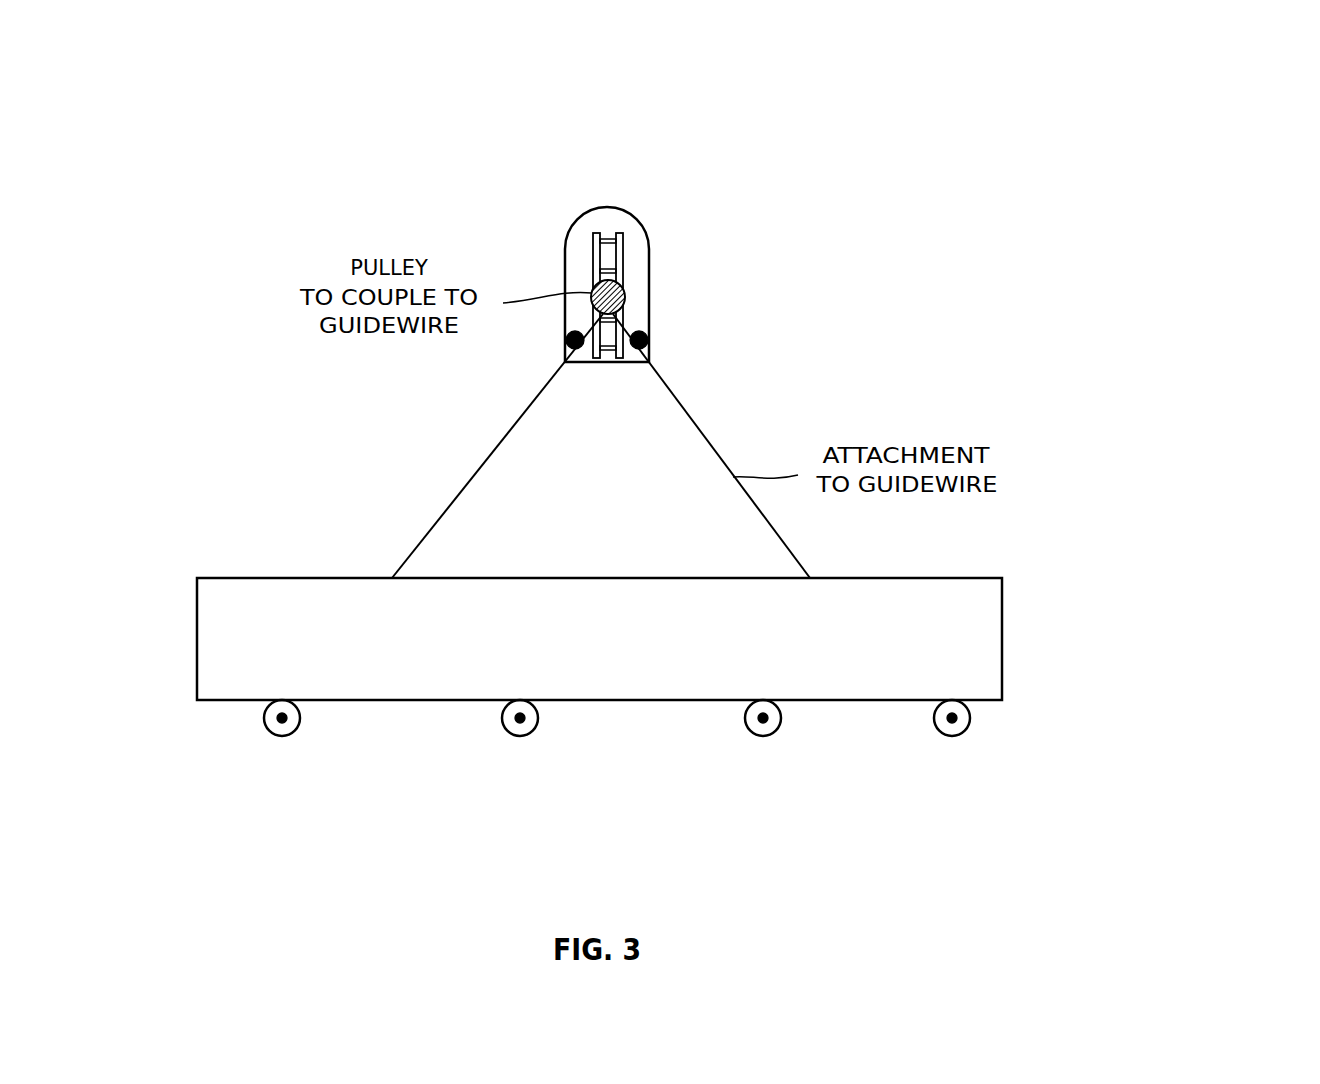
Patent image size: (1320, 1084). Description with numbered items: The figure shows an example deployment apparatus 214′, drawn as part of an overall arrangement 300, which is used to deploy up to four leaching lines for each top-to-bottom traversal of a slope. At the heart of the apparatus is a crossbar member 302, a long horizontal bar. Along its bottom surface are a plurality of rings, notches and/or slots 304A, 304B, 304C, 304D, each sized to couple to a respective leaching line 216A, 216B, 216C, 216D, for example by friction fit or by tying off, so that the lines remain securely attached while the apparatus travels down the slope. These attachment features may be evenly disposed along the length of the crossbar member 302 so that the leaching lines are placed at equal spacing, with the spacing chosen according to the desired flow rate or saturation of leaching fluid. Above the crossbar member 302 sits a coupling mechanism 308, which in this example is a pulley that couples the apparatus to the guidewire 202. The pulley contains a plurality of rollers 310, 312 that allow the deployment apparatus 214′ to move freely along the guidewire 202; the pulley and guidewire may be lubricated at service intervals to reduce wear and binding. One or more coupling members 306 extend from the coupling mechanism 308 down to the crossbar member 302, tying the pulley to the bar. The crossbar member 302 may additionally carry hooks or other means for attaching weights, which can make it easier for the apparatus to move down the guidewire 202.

The robotic catheter system 300 is at (1209, 66).
The deployment apparatus 214′ is at (185, 236).
The coupling mechanism 308 is at (642, 208).
The roller 310 is at (623, 255).
The guidewire 202 is at (625, 297).
The roller 312 is at (620, 317).
The coupling member 306 is at (470, 482).
The crossbar member 302 is at (1002, 635).
The ring, notch and/or slot 304A is at (300, 718).
The ring, notch and/or slot 304B is at (538, 718).
The ring, notch and/or slot 304C is at (781, 718).
The ring, notch and/or slot 304D is at (970, 718).
The leaching line 216A is at (268, 729).
The leaching line 216B is at (505, 729).
The leaching line 216C is at (750, 730).
The leaching line 216D is at (938, 730).